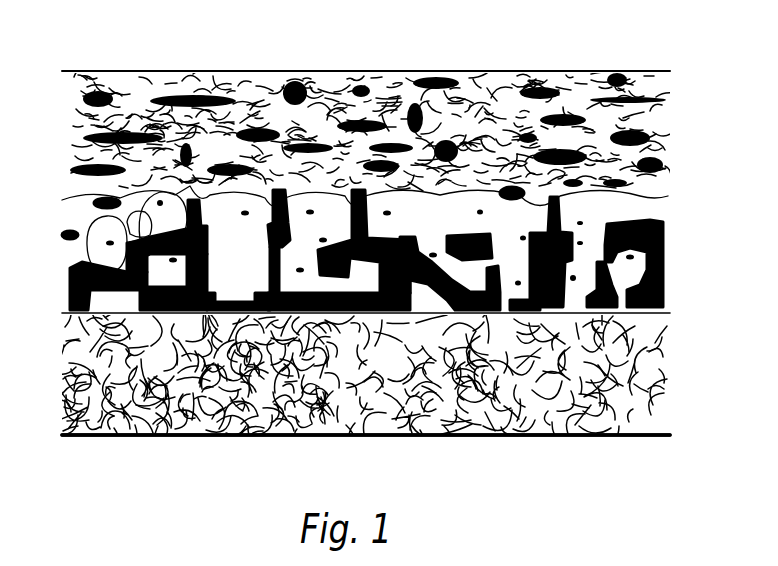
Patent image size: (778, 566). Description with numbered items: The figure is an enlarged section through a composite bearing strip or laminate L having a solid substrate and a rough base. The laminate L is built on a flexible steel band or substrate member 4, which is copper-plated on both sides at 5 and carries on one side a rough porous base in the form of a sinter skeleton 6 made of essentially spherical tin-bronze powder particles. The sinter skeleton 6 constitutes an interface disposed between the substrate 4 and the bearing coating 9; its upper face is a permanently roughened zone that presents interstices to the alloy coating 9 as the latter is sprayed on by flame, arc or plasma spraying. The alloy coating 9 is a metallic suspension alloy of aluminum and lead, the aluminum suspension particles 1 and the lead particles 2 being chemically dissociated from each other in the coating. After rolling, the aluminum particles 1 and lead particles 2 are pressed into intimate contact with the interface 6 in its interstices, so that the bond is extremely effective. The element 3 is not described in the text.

The aluminum suspension particles 1 is at (191, 117).
The lead particles 2 is at (255, 135).
The foam cell of intermediate layer 3 is at (106, 226).
The substrate member 4 is at (92, 400).
The copper plating 5 is at (118, 312).
The sinter skeleton 6 is at (665, 258).
The alloy coating 9 is at (680, 139).
The laminate L is at (474, 442).